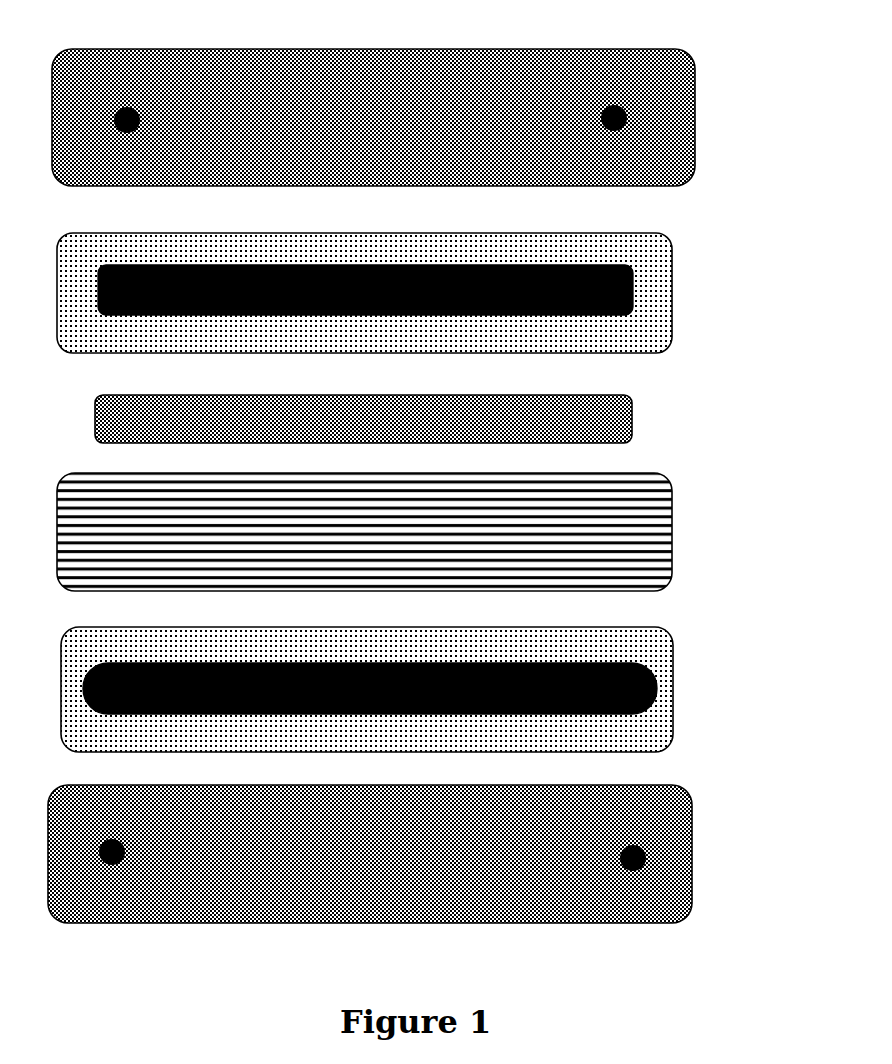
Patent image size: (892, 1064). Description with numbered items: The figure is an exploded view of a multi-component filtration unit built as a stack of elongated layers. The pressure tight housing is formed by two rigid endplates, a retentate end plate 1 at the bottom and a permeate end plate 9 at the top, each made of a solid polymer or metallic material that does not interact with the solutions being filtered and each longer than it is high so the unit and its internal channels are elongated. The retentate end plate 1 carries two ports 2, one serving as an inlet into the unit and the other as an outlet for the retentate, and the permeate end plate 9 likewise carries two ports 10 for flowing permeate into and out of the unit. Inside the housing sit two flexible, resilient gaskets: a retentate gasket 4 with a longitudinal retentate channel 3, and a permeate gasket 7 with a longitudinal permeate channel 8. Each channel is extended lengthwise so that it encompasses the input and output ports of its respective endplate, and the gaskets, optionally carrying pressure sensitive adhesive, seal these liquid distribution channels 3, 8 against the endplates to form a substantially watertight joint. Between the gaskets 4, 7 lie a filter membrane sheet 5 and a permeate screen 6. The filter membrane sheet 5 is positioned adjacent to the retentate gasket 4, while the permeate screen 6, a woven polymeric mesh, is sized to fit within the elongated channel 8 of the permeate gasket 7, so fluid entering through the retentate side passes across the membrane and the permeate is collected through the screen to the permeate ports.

The retentate end plate 1 is at (417, 840).
The inlet and outlet ports 2 is at (642, 850).
The longitudinal retentate channel 3 is at (658, 690).
The retentate gasket 4 is at (650, 645).
The filter membrane sheet 5 is at (665, 555).
The permeate screen 6 is at (630, 416).
The permeate gasket 7 is at (655, 328).
The longitudinal permeate channel 8 is at (630, 278).
The permeate end plate 9 is at (408, 95).
The permeate ports 10 is at (620, 114).